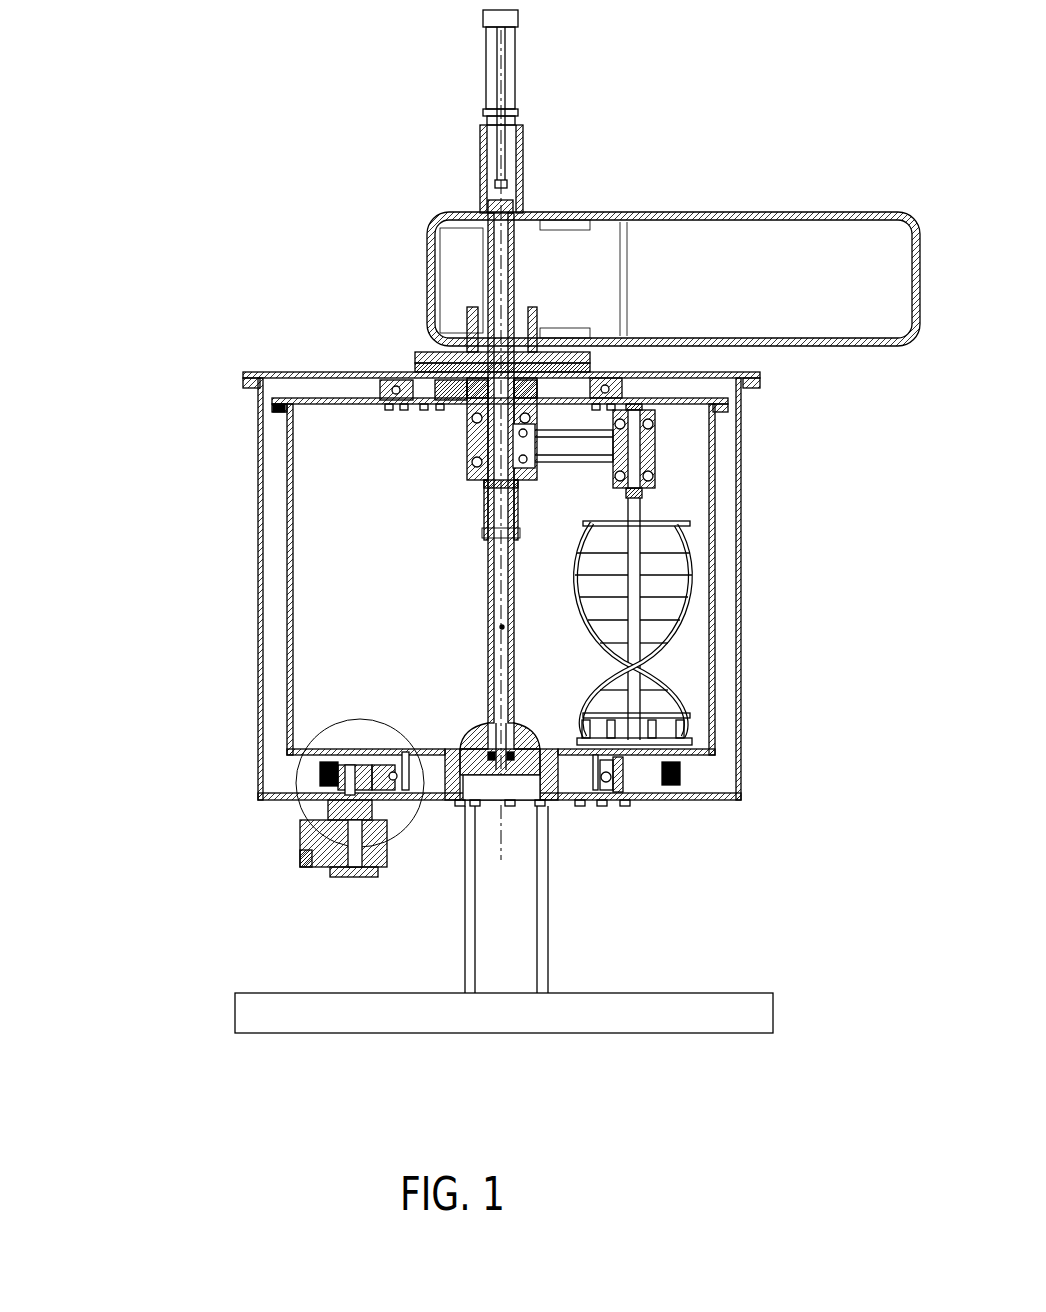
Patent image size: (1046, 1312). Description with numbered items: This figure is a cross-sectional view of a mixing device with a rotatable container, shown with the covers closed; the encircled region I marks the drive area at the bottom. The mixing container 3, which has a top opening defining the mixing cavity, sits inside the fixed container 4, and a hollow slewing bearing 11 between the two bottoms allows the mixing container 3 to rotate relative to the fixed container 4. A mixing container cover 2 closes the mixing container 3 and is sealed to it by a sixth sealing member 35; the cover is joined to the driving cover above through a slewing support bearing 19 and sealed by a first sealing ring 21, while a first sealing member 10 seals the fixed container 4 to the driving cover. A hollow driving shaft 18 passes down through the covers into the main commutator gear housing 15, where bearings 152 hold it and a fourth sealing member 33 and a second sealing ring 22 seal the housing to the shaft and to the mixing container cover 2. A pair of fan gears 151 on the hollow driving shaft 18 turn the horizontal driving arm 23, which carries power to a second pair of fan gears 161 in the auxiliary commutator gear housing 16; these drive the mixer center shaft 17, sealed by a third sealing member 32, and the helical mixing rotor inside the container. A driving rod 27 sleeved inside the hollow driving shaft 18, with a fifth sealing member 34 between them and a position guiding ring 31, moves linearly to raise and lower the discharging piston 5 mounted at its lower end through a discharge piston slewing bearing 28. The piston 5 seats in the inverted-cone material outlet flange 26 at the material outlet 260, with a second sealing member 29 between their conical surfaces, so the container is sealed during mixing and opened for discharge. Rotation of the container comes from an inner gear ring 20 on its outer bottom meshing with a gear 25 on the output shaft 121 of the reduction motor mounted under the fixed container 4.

The mixing container cover 2 is at (330, 400).
The mixing container 3 is at (288, 677).
The fixed container 4 is at (741, 756).
The discharging piston 5 is at (497, 790).
The first sealing member 10 is at (243, 374).
The hollow slewing bearing 11 is at (370, 877).
The main commutator gear housing 15 is at (457, 405).
The auxiliary commutator gear housing 16 is at (652, 447).
The mixer center shaft 17 is at (635, 610).
The hollow driving shaft 18 is at (492, 240).
The slewing support bearing 19 is at (418, 388).
The inner gear ring 20 is at (340, 778).
The first sealing ring 21 is at (407, 372).
The second sealing ring 22 is at (582, 438).
The horizontal driving arm 23 is at (613, 407).
The gear 25 is at (305, 822).
The material outlet flange 26 is at (548, 783).
The driving rod 27 is at (502, 627).
The discharge piston slewing bearing 28 is at (528, 800).
The second sealing member 29 is at (462, 800).
The position guiding ring 31 is at (490, 531).
The third sealing member 32 is at (638, 492).
The fourth sealing member 33 is at (518, 486).
The fifth sealing member 34 is at (490, 535).
The sixth sealing member 35 is at (278, 408).
The output shaft 121 is at (302, 858).
The fan gears 151 is at (523, 440).
The bearings 152 is at (470, 473).
The fan gears 161 is at (638, 457).
The material outlet 260 is at (513, 790).
The detail region I is at (300, 805).